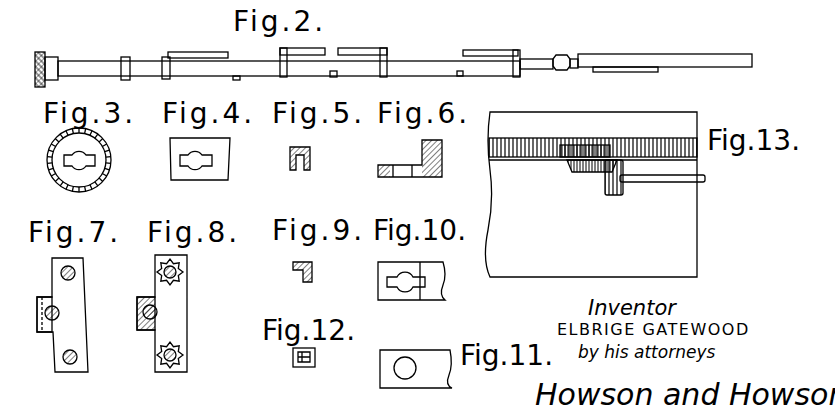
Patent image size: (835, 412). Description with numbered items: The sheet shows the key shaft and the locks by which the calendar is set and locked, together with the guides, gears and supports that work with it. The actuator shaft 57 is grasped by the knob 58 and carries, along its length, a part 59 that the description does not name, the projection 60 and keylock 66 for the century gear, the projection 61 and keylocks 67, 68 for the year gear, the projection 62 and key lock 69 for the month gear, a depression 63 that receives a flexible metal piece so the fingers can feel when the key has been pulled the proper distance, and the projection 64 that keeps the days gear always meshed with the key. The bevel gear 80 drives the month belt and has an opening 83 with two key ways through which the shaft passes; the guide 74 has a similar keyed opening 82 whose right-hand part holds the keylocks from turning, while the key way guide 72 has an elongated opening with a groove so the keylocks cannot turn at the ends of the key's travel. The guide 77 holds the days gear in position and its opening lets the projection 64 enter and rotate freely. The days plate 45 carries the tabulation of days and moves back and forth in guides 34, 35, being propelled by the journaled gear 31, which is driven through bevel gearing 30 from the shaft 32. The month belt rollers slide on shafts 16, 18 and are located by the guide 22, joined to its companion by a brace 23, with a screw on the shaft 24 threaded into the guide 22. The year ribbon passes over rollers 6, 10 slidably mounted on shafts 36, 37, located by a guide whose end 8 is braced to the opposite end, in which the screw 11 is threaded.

In FIG. 2, the actuator shaft 57 is at (87, 63).
In FIG. 2, the knob 58 is at (35, 58).
In FIG. 2, the collar 59 is at (125, 62).
In FIG. 2, the keylock 66 is at (165, 60).
In FIG. 2, the projection 60 is at (233, 72).
In FIG. 2, the keylock 67 is at (320, 50).
In FIG. 2, the projection 61 is at (333, 72).
In FIG. 2, the keylock 68 is at (380, 53).
In FIG. 2, the projection 62 is at (462, 68).
In FIG. 2, the key lock 69 is at (518, 50).
In FIG. 2, the depression 63 is at (572, 53).
In FIG. 2, the projection 64 is at (623, 70).
In FIG. 3, the bevel gear 80 is at (67, 170).
In FIG. 3, the opening 83 is at (85, 165).
In FIG. 4, the guide 74 is at (218, 157).
In FIG. 4, the opening 82 is at (198, 167).
In FIG. 5, the guide 34 is at (310, 158).
In FIG. 9, the guide 34 is at (305, 272).
In FIG. 6, the guide 72 is at (422, 158).
In FIG. 10, the guide 72 is at (435, 272).
In FIG. 13, the gear 31 is at (572, 168).
In FIG. 13, the bevel gearing 30 is at (608, 192).
In FIG. 13, the shaft 32 is at (672, 178).
In FIG. 13, the plate 45 is at (687, 242).
In FIG. 7, the shaft 16 is at (75, 272).
In FIG. 7, the shaft 24 is at (58, 313).
In FIG. 7, the guide 22 is at (73, 333).
In FIG. 7, the brace 23 is at (42, 332).
In FIG. 7, the shaft 18 is at (77, 362).
In FIG. 8, the roller 6 is at (162, 270).
In FIG. 8, the shaft 36 is at (187, 268).
In FIG. 8, the screw 11 is at (160, 312).
In FIG. 8, the end 8 is at (178, 328).
In FIG. 8, the roller 10 is at (162, 355).
In FIG. 8, the shaft 37 is at (182, 357).
In FIG. 12, the guide 35 is at (308, 367).
In FIG. 11, the guide 77 is at (417, 353).